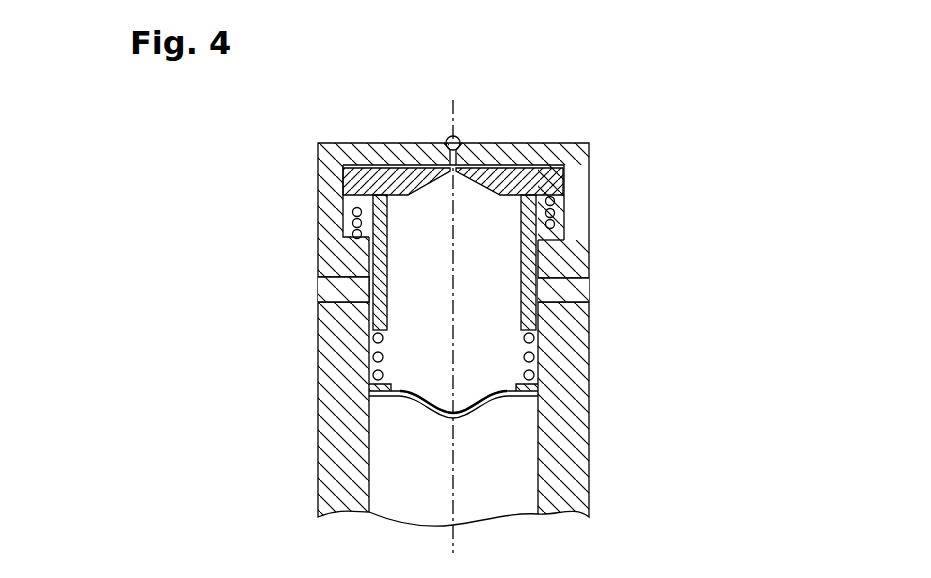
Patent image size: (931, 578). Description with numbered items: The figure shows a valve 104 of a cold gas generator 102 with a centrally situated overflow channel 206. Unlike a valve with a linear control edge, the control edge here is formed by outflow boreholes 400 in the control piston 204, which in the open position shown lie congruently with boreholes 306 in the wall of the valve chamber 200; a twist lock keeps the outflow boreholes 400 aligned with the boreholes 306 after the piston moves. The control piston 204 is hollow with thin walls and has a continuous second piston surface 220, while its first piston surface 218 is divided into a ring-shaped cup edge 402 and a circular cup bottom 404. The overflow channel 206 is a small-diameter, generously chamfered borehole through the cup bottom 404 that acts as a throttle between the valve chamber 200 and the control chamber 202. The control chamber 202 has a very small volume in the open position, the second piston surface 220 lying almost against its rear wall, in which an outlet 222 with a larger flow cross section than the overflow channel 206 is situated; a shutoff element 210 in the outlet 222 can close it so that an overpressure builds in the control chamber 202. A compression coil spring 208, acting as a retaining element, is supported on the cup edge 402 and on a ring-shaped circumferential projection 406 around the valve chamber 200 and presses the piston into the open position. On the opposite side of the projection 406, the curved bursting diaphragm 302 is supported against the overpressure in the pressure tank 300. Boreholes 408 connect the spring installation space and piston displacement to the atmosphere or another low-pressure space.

The cold gas generator 102 is at (688, 450).
The valve 104 is at (174, 188).
The valve chamber 200 is at (485, 353).
The control chamber 202 is at (350, 170).
The control piston 204 is at (563, 184).
The overflow channel 206 is at (437, 147).
The spring 208 is at (345, 210).
The shutoff element 210 is at (459, 139).
The first piston surface 218 is at (513, 318).
The second piston surface 220 is at (535, 165).
The outlet 222 is at (443, 144).
The pressure tank 300 is at (398, 470).
The bursting diaphragm 302 is at (413, 403).
The boreholes 306 is at (348, 290).
The outflow boreholes 400 is at (521, 285).
The cup edge 402 is at (538, 326).
The cup bottom 404 is at (565, 246).
The projection 406 is at (370, 390).
The boreholes 408 is at (575, 231).